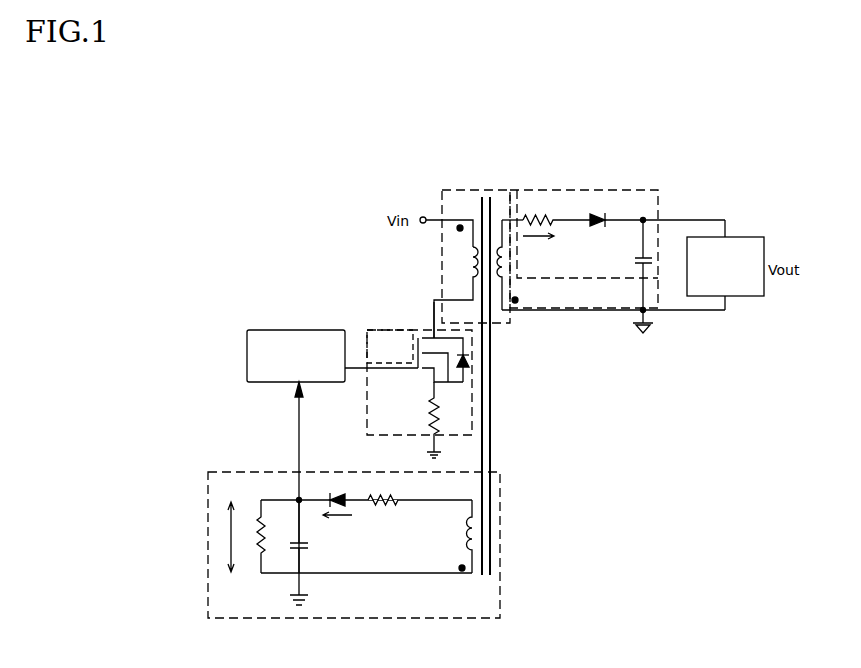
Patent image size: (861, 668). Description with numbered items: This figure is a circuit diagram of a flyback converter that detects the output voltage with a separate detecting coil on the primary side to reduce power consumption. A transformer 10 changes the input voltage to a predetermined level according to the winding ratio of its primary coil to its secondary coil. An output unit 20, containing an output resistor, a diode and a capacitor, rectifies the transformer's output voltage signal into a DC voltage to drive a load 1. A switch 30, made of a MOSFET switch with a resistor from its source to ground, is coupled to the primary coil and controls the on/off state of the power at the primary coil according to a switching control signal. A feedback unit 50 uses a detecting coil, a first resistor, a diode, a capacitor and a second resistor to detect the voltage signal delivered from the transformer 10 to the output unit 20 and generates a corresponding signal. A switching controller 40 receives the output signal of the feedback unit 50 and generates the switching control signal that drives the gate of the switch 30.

The load 1 is at (737, 234).
The transformer 10 is at (458, 190).
The output unit 20 is at (587, 190).
The switch 30 is at (384, 330).
The switching controller 40 is at (300, 330).
The feedback unit 50 is at (502, 490).